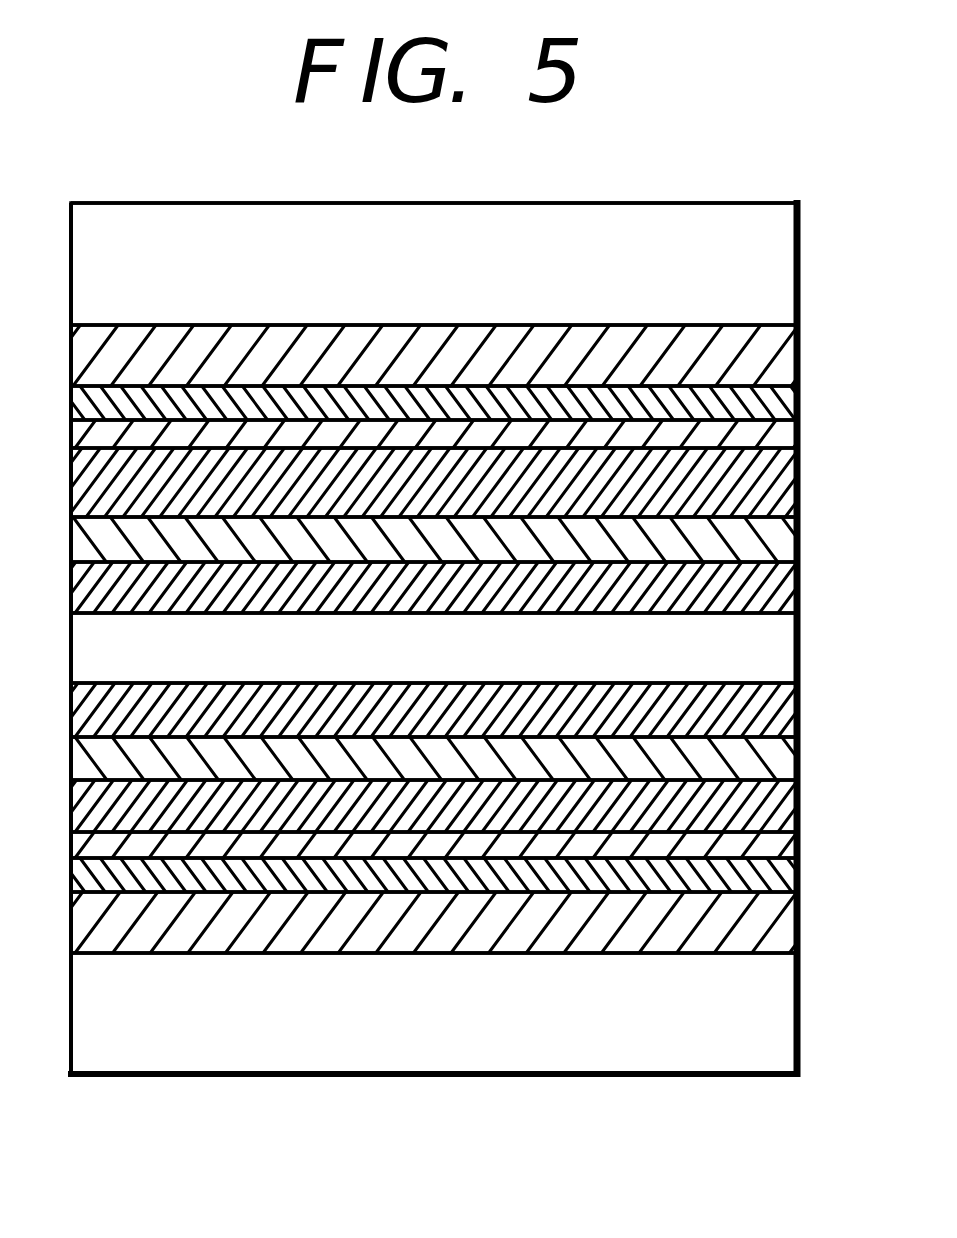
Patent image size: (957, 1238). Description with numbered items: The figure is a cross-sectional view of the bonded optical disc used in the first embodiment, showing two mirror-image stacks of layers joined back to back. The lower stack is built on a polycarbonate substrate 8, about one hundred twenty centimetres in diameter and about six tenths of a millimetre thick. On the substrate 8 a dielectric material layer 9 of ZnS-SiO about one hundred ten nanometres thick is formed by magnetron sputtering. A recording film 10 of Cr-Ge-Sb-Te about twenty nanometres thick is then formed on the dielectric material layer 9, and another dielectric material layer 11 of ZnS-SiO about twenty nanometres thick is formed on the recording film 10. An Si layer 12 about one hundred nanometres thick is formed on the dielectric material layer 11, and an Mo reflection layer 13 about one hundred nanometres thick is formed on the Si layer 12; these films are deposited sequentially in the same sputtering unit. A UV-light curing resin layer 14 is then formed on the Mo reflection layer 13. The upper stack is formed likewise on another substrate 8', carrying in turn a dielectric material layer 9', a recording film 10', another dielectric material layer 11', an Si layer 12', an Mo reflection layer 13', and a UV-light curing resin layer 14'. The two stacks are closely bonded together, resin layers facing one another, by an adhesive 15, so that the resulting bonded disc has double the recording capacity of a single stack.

The polycarbonate substrate 8 is at (802, 998).
The dielectric material layer 9 is at (802, 945).
The recording film 10 is at (802, 900).
The dielectric material layer 11 is at (802, 857).
The Si layer 12 is at (802, 815).
The Mo reflection layer 13 is at (802, 773).
The UV-light curing resin layer 14 is at (802, 718).
The adhesive 15 is at (802, 650).
The substrate 8' is at (466, 264).
The dielectric material layer 9' is at (448, 355).
The recording film 10' is at (471, 403).
The dielectric material layer 11' is at (477, 443).
The Si layer 12' is at (457, 482).
The Mo reflection layer 13' is at (477, 540).
The UV-light curing resin layer 14' is at (460, 587).